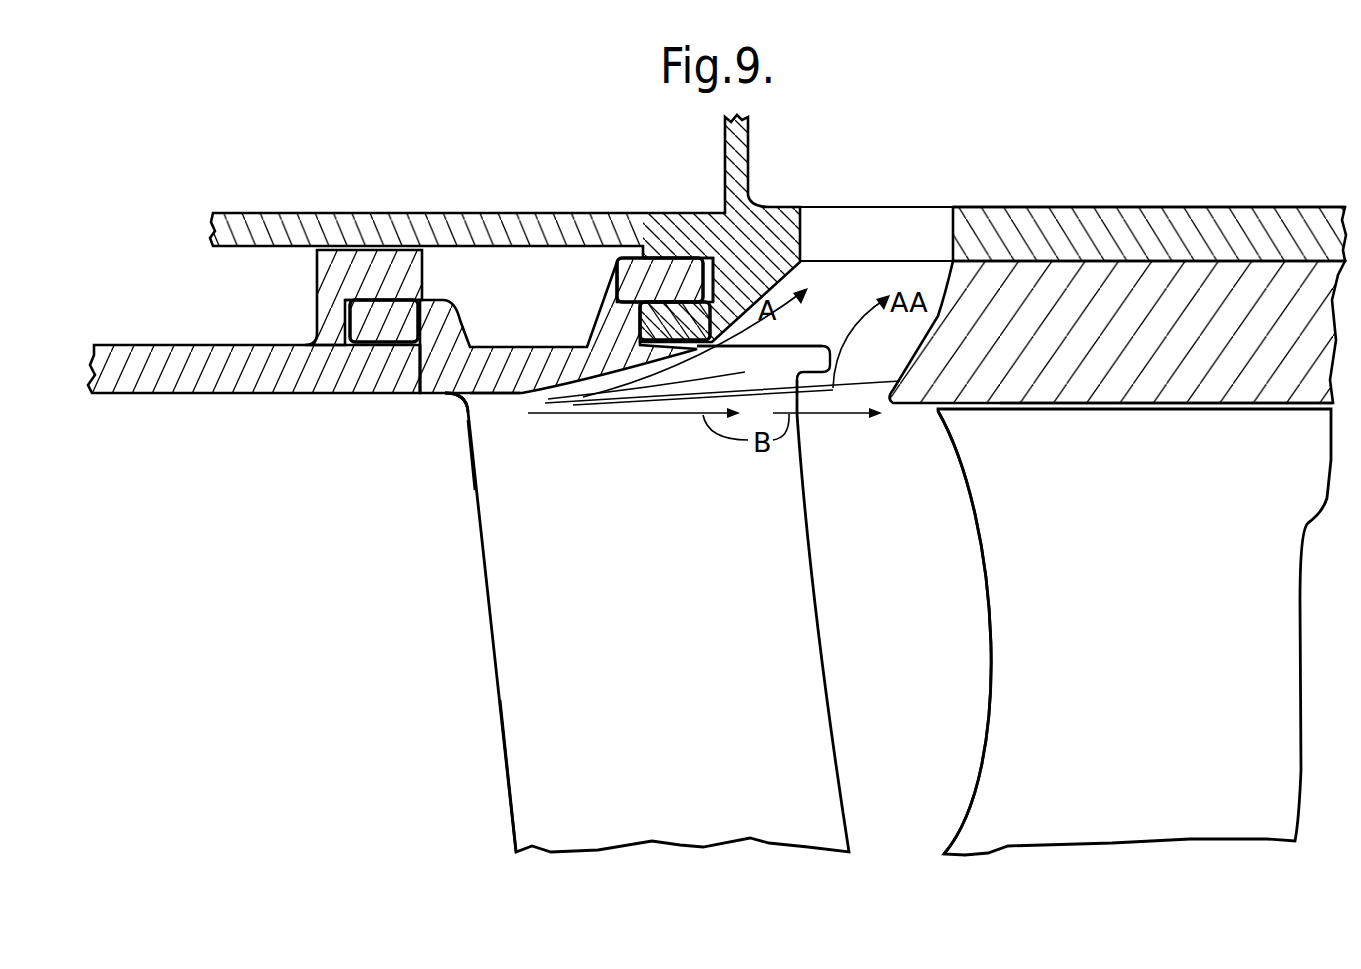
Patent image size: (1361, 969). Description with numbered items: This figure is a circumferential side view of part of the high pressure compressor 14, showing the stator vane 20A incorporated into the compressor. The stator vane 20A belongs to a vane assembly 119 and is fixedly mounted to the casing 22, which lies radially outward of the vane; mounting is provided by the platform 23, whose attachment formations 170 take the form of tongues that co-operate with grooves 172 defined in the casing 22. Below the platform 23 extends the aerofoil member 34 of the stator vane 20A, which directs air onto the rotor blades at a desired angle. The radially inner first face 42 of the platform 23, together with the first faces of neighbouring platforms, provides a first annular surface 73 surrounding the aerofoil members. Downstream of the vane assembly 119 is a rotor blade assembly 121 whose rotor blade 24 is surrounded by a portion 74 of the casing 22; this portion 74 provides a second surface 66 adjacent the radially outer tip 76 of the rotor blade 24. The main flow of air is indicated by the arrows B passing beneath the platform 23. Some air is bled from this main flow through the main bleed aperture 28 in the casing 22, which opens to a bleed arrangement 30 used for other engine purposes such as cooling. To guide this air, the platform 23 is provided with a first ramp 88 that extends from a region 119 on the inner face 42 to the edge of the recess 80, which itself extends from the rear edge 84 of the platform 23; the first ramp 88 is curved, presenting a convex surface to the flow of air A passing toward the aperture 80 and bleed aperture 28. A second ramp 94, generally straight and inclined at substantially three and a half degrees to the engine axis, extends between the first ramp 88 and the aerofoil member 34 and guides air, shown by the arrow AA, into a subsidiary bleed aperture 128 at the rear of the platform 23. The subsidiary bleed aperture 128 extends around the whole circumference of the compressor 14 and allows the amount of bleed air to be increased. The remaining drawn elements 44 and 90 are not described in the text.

The high pressure compressor 14 is at (172, 288).
The casing 22 is at (345, 278).
The grooves 172 is at (408, 300).
The attachment formations 170 is at (377, 322).
The shroud hook piece 44 is at (663, 328).
The main bleed aperture 28 is at (832, 225).
The platform 23 is at (430, 396).
The stator vane 20A is at (540, 557).
The vane assembly 119 is at (528, 491).
The aerofoil member 34 is at (534, 769).
The first face 42 is at (512, 399).
The first annular surface 73 is at (493, 399).
The flow stream 90 is at (530, 399).
The first ramp 88 is at (678, 372).
The second ramp 94 is at (808, 350).
The recess 80 is at (826, 352).
The rear edge 84 is at (835, 365).
The subsidiary bleed aperture 128 is at (863, 372).
The bleed arrangement 30 is at (937, 178).
The second surface 66 is at (1064, 411).
The casing portion 74 is at (1228, 367).
The radially outer tip 76 is at (1132, 413).
The rotor blade 24 is at (1025, 793).
The rotor blade assembly 121 is at (1031, 706).